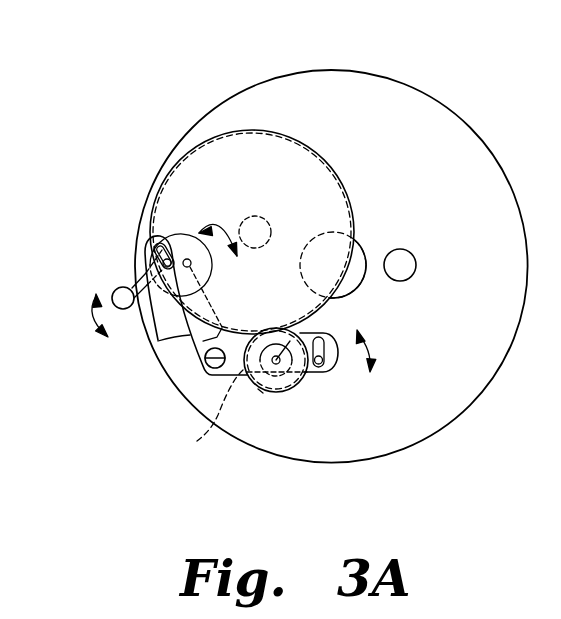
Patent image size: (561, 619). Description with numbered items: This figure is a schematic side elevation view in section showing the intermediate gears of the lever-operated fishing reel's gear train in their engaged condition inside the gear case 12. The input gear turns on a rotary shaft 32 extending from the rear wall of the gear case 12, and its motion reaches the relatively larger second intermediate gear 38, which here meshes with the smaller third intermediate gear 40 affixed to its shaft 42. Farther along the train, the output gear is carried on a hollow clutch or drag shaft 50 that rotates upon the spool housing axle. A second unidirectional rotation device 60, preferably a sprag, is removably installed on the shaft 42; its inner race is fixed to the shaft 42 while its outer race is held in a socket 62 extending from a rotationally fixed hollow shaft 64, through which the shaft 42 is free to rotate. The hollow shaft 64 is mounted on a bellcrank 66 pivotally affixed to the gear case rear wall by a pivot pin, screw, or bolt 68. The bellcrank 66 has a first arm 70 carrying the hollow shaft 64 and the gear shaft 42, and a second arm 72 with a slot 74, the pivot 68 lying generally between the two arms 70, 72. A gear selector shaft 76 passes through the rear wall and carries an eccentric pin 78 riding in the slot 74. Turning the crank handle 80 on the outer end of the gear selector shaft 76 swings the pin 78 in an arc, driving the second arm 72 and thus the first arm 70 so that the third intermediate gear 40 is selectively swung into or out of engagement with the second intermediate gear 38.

The gear case 12 is at (333, 70).
The rotary shaft 32 is at (411, 253).
The second intermediate gear 38 is at (329, 162).
The third intermediate gear 40 is at (271, 384).
The shaft 42 is at (308, 329).
The clutch or drag shaft 50 is at (362, 279).
The second unidirectional rotation device 60 is at (283, 384).
The socket 62 is at (260, 387).
The hollow shaft 64 is at (201, 415).
The bellcrank 66 is at (157, 342).
The pivot pin, screw, or bolt 68 is at (204, 378).
The first arm 70 is at (340, 352).
The second arm 72 is at (162, 259).
The slot 74 is at (177, 245).
The gear selector shaft 76 is at (190, 263).
The eccentric pin 78 is at (210, 312).
The crank handle 80 is at (125, 287).